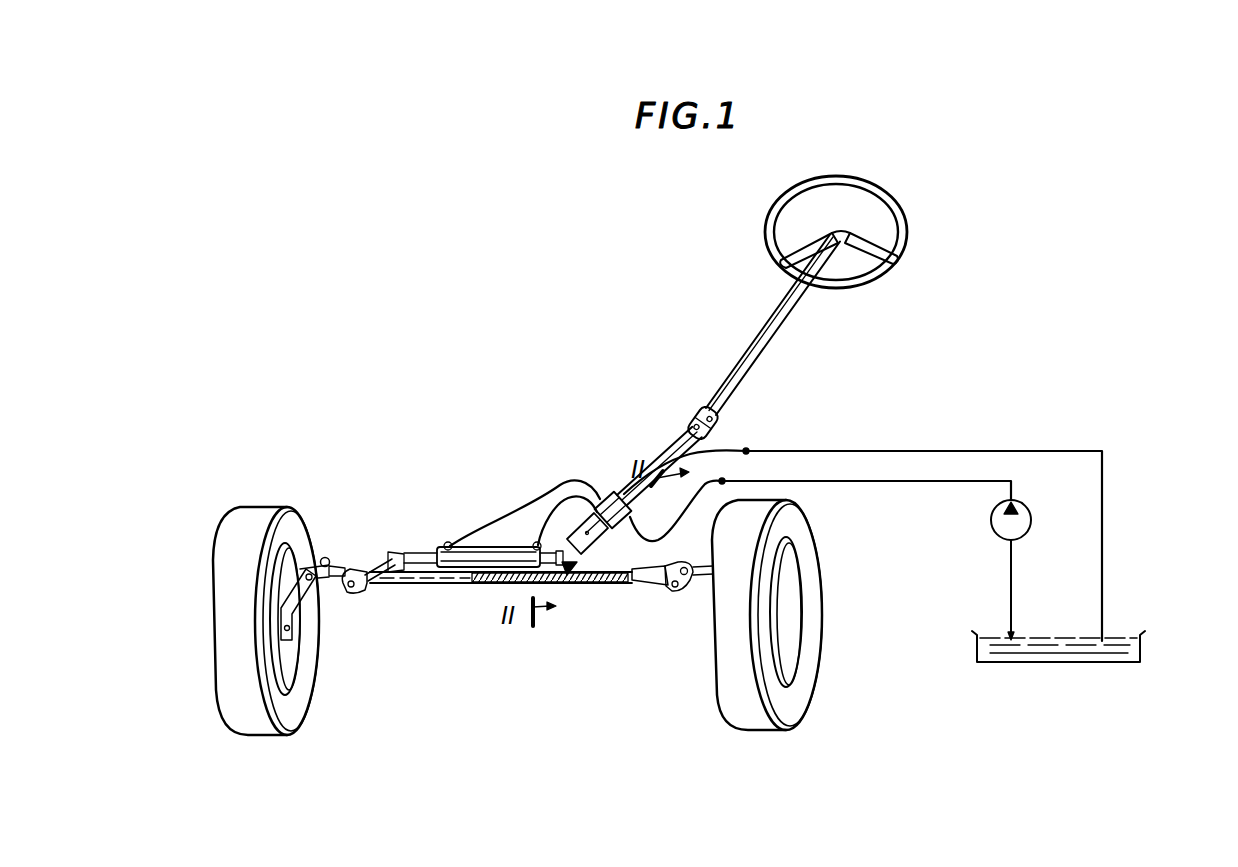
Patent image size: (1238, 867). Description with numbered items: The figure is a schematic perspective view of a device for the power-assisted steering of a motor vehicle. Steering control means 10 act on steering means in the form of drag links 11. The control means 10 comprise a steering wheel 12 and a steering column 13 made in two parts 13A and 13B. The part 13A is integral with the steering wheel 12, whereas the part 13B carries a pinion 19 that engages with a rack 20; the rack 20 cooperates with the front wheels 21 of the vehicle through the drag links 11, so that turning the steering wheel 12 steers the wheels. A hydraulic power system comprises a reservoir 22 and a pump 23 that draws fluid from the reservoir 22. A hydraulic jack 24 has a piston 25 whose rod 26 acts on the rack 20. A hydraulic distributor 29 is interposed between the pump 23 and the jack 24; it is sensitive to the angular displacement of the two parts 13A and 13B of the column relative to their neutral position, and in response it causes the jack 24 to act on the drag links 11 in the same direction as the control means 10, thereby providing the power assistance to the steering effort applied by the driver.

The steering control means 10 is at (757, 335).
The drag links 11 is at (343, 562).
The steering wheel 12 is at (903, 207).
The steering column 13 is at (666, 448).
The first part of the steering column 13A is at (629, 488).
The second part of the steering column 13B is at (601, 550).
The pinion 19 is at (573, 580).
The rack 20 is at (484, 583).
The front wheels 21 is at (218, 545).
The reservoir 22 is at (1140, 662).
The pump 23 is at (1031, 512).
The hydraulic jack 24 is at (522, 548).
The piston 25 is at (492, 555).
The rod 26 is at (413, 552).
The hydraulic distributor 29 is at (621, 496).